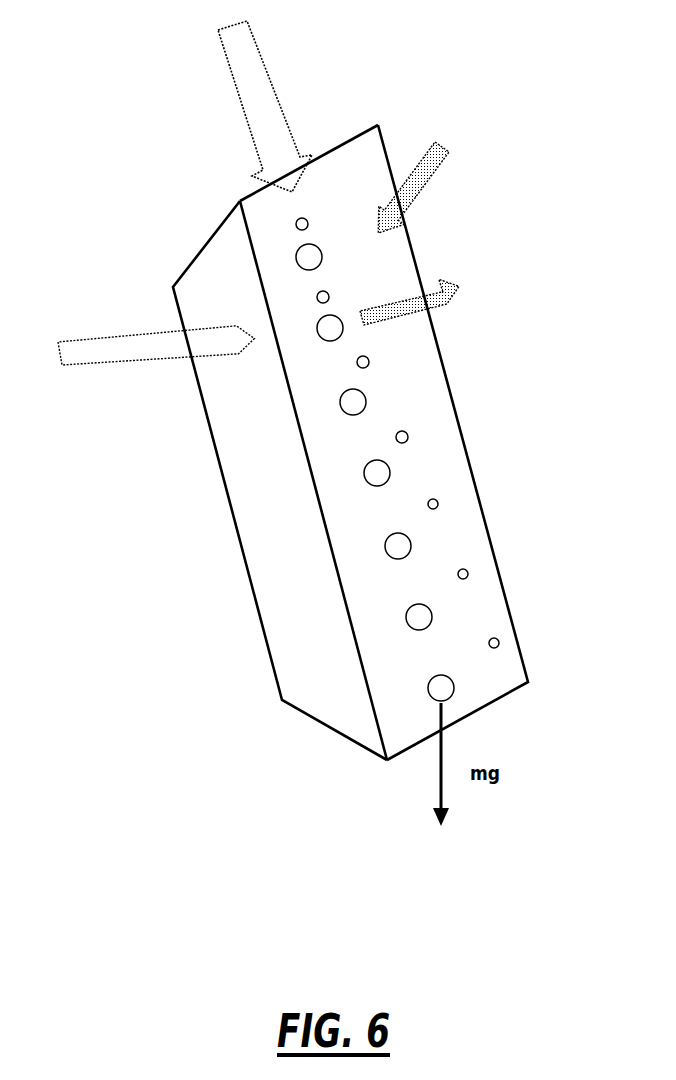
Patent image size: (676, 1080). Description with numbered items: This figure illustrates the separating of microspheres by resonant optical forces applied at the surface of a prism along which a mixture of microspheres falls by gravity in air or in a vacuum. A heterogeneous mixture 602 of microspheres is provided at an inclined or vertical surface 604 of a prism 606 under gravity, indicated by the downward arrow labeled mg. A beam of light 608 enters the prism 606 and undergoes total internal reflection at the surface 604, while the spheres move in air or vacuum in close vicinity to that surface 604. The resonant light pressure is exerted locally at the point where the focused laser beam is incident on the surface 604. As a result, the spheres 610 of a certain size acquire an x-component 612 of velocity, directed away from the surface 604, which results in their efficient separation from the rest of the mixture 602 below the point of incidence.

The heterogeneous mixture 602 is at (250, 82).
The inclined or vertical surface 604 is at (432, 385).
The prism 606 is at (262, 492).
The beam of light 608 is at (428, 157).
The spheres 610 is at (433, 502).
The x-component of velocity 612 is at (407, 298).